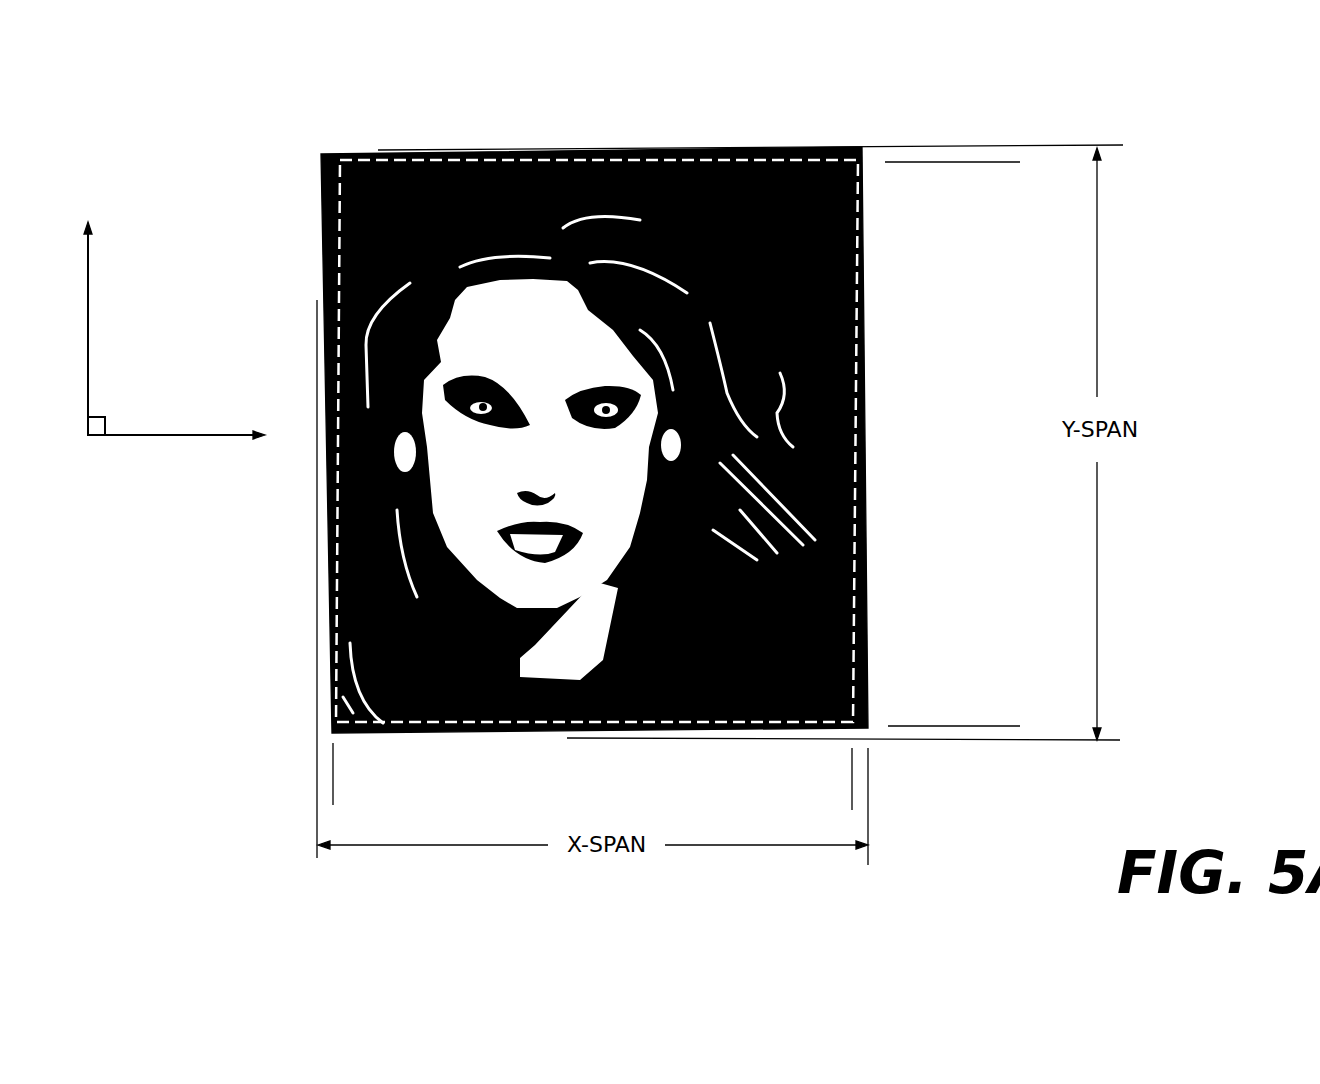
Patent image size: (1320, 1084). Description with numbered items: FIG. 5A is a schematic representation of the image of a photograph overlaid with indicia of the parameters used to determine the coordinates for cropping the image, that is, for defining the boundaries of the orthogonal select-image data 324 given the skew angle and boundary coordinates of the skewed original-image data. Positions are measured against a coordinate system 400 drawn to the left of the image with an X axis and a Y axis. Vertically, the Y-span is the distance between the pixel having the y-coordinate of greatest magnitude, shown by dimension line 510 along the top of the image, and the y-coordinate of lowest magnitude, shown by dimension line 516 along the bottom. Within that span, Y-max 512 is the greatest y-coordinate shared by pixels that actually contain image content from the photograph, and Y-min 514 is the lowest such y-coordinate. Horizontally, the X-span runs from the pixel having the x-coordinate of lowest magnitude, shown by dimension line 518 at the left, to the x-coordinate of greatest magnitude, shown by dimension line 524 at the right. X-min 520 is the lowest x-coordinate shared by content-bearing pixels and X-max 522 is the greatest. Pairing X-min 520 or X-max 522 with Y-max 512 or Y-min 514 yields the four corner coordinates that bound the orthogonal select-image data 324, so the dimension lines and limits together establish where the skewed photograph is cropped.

The orthogonal select-image data 324 is at (865, 285).
The coordinate system 400 is at (173, 437).
The dimension line 510 is at (1028, 143).
The Y-max 512 is at (915, 165).
The Y-min 514 is at (928, 718).
The dimension line 516 is at (945, 747).
The dimension line 518 is at (316, 743).
The X-min 520 is at (335, 771).
The X-max 522 is at (850, 773).
The dimension line 524 is at (878, 830).